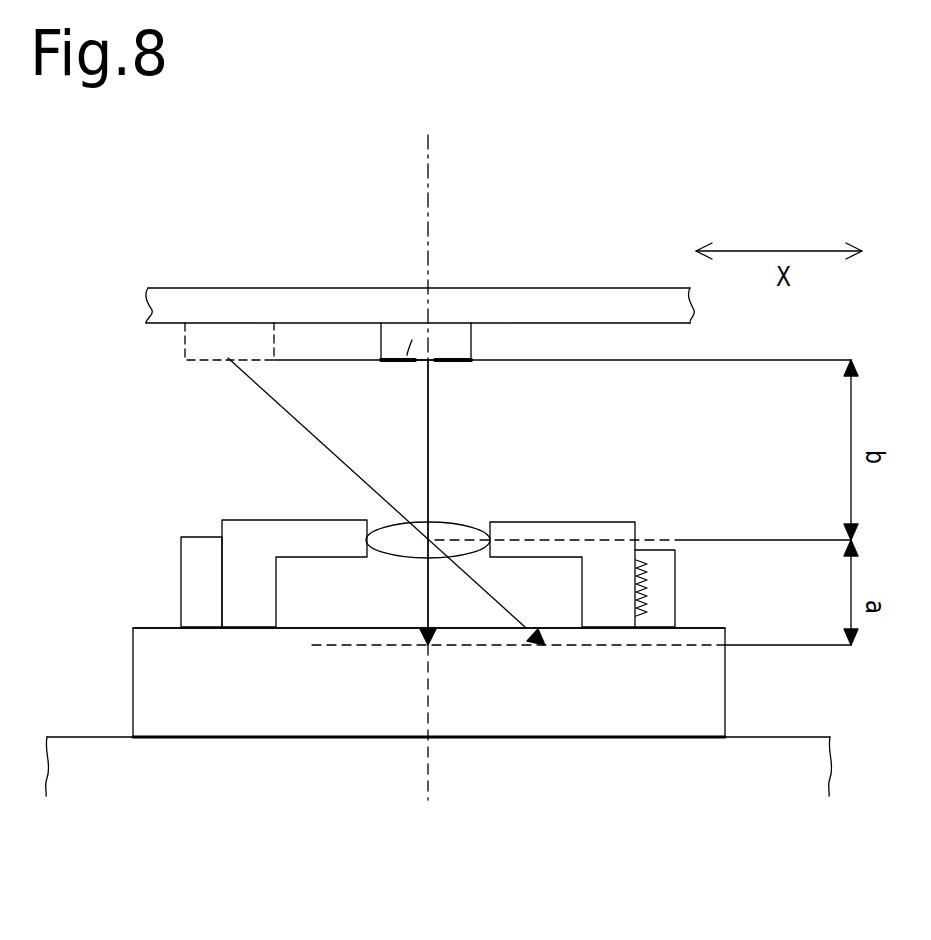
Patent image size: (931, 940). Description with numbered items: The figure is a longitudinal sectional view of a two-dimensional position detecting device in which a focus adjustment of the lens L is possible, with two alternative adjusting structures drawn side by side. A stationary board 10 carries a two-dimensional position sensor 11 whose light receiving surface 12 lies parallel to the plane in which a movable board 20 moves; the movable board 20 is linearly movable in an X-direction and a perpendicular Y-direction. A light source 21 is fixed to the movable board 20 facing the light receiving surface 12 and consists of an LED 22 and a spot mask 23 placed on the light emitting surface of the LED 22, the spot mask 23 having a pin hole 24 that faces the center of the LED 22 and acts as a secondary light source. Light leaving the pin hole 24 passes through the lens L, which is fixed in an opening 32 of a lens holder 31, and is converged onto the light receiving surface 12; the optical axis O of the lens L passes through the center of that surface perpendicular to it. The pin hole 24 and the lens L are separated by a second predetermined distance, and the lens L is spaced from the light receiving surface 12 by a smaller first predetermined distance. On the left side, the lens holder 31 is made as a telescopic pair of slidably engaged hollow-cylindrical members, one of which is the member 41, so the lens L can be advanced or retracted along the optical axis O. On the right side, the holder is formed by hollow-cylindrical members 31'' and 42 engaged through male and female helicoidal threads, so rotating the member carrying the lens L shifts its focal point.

The stationary board 10 is at (355, 802).
The two-dimensional position sensor 11 is at (150, 669).
The light receiving surface 12 is at (347, 643).
The movable board 20 is at (632, 297).
The light source 21 is at (226, 358).
The LED 22 is at (444, 330).
The spot mask 23 is at (457, 359).
The pin hole 24 is at (227, 360).
The lens holder 31 is at (251, 546).
The hollow-cylindrical member 31'' is at (577, 537).
The opening 32 is at (367, 518).
The hollow-cylindrical member 41 is at (200, 558).
The hollow-cylindrical member 42 is at (657, 583).
The optical axis O is at (430, 473).
The lens L is at (457, 522).